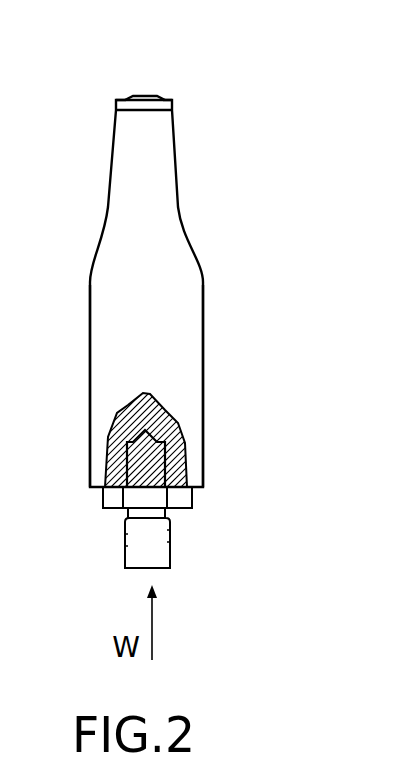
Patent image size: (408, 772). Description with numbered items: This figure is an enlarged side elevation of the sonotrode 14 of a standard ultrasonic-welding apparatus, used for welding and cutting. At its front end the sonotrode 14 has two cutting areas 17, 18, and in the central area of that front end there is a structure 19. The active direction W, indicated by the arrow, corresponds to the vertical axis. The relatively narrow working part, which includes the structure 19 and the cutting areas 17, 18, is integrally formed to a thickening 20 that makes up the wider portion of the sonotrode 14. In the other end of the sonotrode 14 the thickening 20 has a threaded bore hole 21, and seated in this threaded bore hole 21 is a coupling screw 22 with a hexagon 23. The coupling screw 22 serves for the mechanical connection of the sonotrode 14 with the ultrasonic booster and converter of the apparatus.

The sonotrode 14 is at (181, 171).
The cutting area 17 is at (115, 86).
The cutting area 18 is at (172, 86).
The structure 19 is at (141, 87).
The thickening 20 is at (90, 350).
The threaded bore hole 21 is at (108, 452).
The coupling screw 22 is at (140, 555).
The hexagon 23 is at (117, 503).